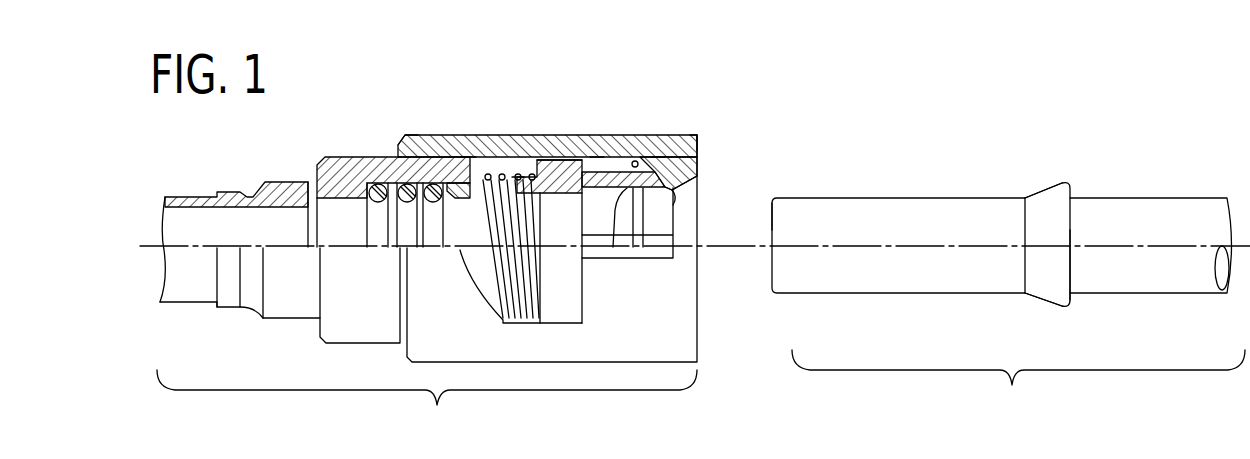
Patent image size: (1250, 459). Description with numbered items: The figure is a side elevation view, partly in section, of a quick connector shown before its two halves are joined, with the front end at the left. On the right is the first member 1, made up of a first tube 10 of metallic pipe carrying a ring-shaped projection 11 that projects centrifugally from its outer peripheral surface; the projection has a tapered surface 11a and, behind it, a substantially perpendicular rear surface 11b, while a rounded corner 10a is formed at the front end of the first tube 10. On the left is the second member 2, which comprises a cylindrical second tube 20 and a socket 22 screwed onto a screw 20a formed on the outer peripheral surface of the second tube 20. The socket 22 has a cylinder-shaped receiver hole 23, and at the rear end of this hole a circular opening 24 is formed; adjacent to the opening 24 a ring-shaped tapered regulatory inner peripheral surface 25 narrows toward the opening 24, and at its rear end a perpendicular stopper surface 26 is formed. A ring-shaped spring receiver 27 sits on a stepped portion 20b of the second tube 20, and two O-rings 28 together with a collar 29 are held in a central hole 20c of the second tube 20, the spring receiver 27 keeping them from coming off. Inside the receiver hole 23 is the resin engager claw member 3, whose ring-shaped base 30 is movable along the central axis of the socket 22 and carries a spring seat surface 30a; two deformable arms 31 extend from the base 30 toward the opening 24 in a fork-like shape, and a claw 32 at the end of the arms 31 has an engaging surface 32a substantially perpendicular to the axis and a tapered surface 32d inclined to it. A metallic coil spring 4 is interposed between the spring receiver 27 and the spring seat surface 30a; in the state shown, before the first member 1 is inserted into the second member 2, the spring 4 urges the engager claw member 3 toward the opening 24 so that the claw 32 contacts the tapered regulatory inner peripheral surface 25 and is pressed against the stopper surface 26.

The first member 1 is at (1018, 389).
The second member 2 is at (427, 411).
The engager claw member 3 is at (597, 153).
The spring 4 is at (497, 153).
The first tube 10 is at (917, 217).
The rounded corner 10a is at (773, 198).
The ring-shaped projection 11 is at (1050, 207).
The tapered surface 11a is at (1037, 195).
The rear surface 11b is at (1070, 297).
The second tube 20 is at (192, 197).
The screw 20a is at (417, 135).
The stepped portion 20b is at (468, 147).
The central hole 20c is at (360, 160).
The socket 22 is at (637, 150).
The receiver hole 23 is at (520, 150).
The opening 24 is at (700, 185).
The tapered regulatory inner peripheral surface 25 is at (657, 150).
The stopper surface 26 is at (697, 147).
The ring-shaped spring receiver 27 is at (458, 199).
The O-ring 28 is at (375, 203).
The collar 29 is at (409, 203).
The ring-shaped base 30 is at (553, 195).
The spring seat surface 30a is at (550, 150).
The deformable arms 31 is at (617, 150).
The claw 32 is at (643, 200).
The engaging surface 32a is at (627, 190).
The tapered surface 32d is at (668, 197).